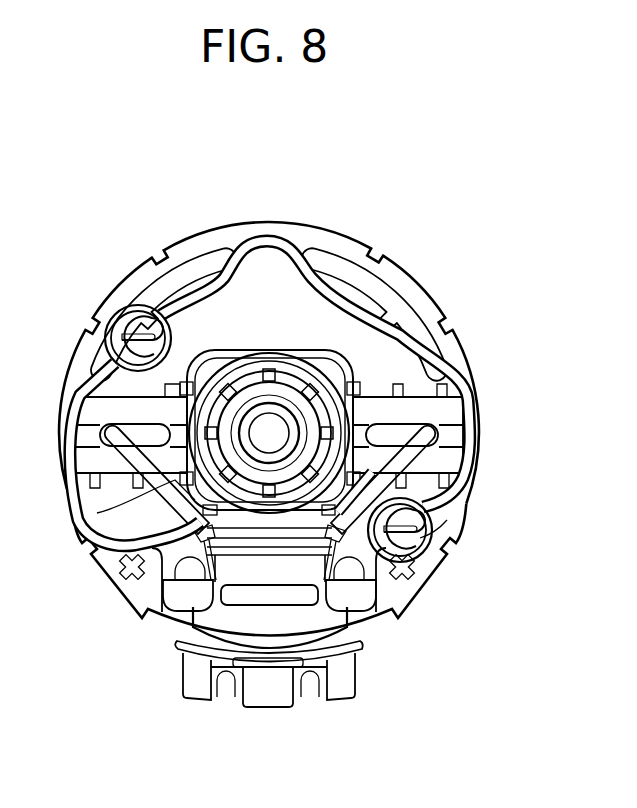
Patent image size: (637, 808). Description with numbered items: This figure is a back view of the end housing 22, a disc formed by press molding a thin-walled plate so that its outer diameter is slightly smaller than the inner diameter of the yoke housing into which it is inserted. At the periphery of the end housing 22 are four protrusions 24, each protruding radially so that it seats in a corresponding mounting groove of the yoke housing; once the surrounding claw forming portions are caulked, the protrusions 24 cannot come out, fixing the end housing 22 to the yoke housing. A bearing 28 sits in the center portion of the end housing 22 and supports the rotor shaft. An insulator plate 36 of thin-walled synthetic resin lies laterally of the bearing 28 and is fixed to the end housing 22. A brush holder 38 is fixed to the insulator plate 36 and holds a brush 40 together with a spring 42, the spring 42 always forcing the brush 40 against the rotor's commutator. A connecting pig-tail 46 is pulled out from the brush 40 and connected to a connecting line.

The end housing 22 is at (240, 222).
The protrusions 24 is at (122, 277).
The bearing 28 is at (347, 375).
The insulator plate 36 is at (277, 273).
The brush holder 38 is at (82, 410).
The brush 40 is at (117, 420).
The spring 42 is at (100, 307).
The connecting pig-tail 46 is at (97, 513).